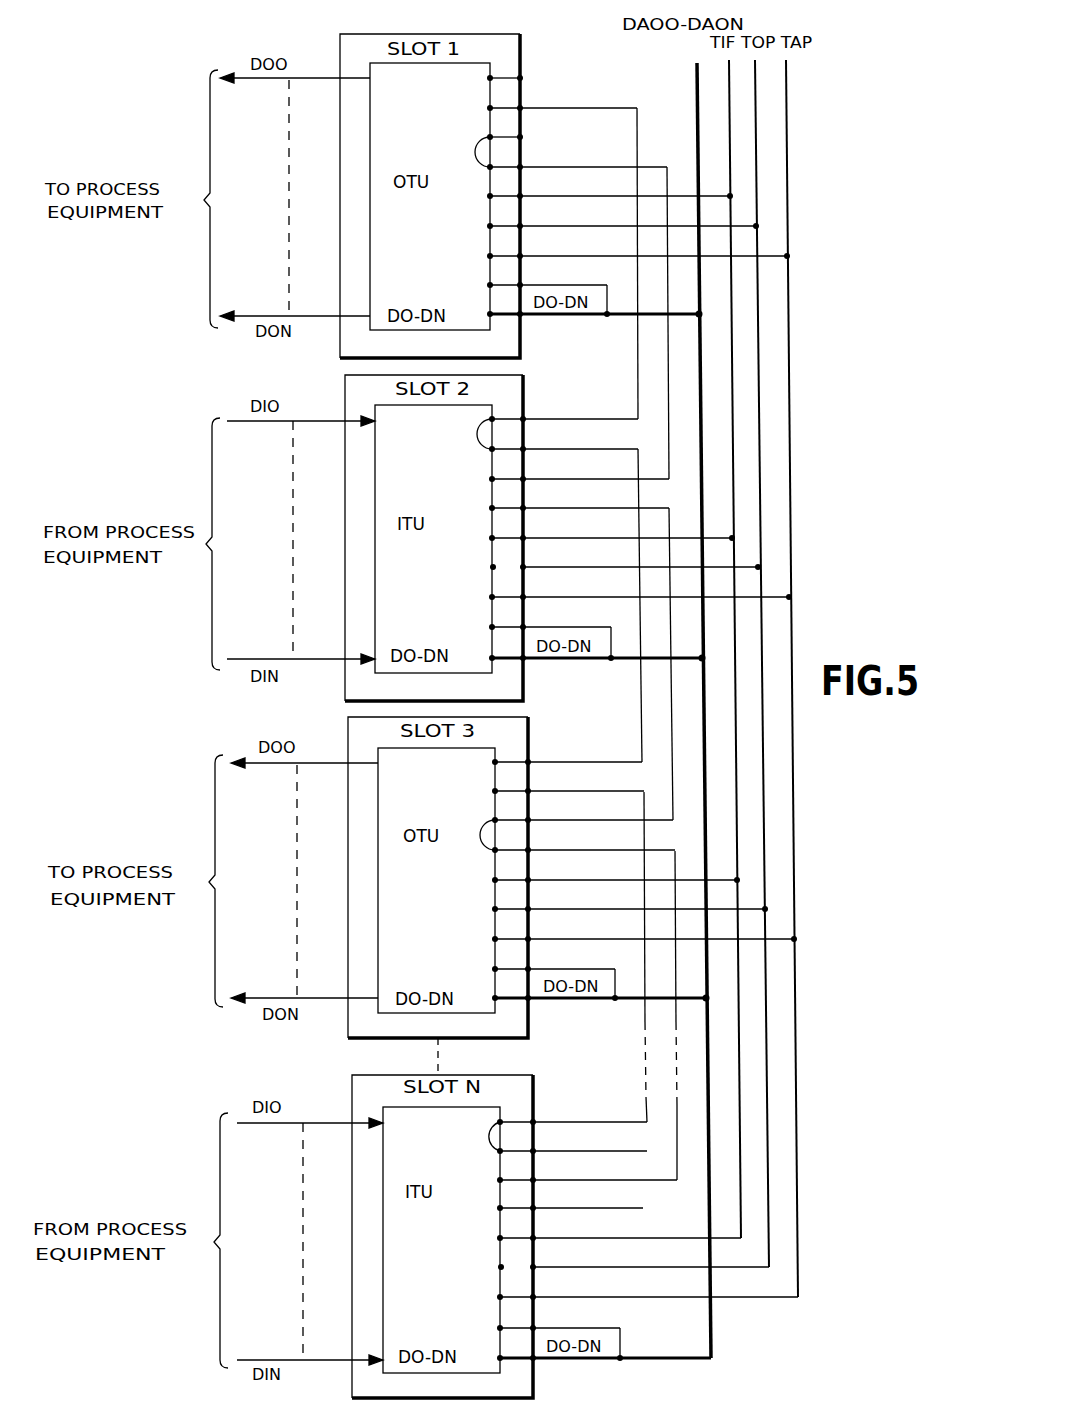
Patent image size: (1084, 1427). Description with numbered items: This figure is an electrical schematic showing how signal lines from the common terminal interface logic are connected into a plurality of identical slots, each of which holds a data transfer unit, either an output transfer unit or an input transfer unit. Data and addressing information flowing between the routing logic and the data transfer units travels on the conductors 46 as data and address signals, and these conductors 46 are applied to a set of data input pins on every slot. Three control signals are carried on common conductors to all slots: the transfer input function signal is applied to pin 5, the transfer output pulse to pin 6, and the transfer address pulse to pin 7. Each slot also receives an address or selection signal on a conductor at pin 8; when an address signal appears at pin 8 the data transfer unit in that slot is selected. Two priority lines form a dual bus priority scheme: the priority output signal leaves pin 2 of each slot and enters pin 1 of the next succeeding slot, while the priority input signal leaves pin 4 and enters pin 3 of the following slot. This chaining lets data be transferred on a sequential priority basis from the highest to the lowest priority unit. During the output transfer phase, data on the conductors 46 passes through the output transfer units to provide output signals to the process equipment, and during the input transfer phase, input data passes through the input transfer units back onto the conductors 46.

The conductors 46 is at (693, 122).
The pin 1 is at (556, 594).
The pin 2 is at (568, 623).
The pin 3 is at (572, 653).
The pin 4 is at (571, 681).
The pin 5 is at (605, 711).
The pin 6 is at (618, 740).
The pin 7 is at (634, 770).
The pin 8 is at (545, 800).